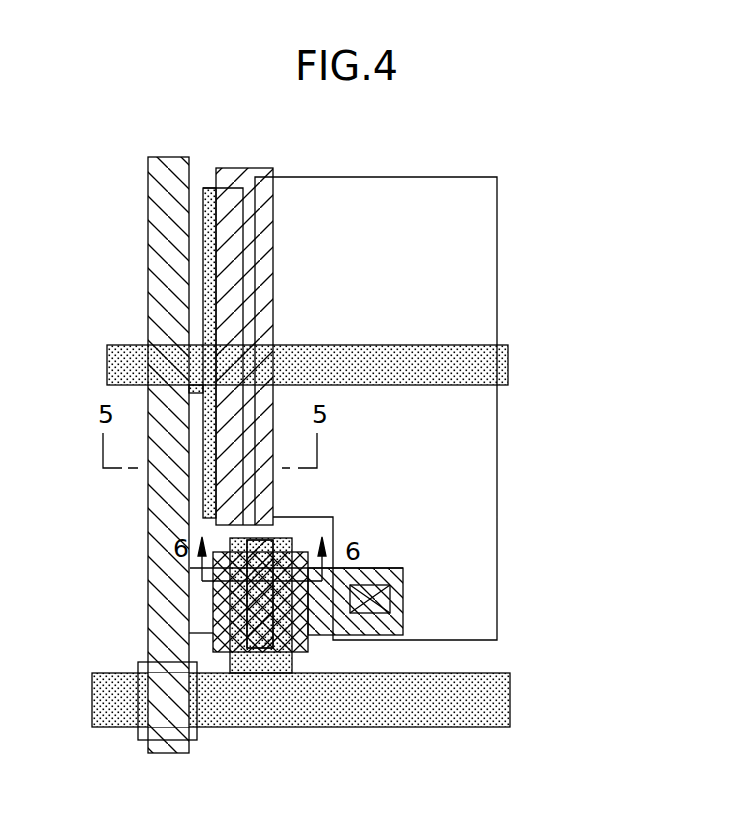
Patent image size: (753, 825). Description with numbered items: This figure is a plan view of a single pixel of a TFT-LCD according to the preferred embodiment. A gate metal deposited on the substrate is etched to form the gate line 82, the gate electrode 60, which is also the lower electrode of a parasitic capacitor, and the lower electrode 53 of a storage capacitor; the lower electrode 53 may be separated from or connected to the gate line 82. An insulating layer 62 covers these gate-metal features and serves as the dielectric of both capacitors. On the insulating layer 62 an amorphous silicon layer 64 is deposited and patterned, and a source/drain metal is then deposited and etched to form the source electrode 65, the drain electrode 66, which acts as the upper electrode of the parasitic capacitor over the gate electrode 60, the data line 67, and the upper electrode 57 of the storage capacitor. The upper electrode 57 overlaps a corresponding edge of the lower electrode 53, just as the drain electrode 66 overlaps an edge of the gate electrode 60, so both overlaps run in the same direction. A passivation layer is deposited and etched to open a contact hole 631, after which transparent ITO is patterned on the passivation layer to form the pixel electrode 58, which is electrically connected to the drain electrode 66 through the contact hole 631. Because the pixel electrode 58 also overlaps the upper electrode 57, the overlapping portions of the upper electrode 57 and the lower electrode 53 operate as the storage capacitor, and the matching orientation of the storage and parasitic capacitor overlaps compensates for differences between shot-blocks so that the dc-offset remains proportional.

The lower electrode of the storage capacitor 53 is at (510, 364).
The insulating layer 62 is at (357, 536).
The gate line 82 is at (510, 704).
The data line 67 is at (158, 232).
The upper electrode of the storage capacitor 57 is at (252, 172).
The pixel electrode 58 is at (487, 495).
The source electrode 65 is at (200, 595).
The gate electrode 60 is at (253, 655).
The amorphous silicon layer 64 is at (292, 650).
The drain electrode 66 is at (333, 543).
The contact hole 631 is at (375, 585).